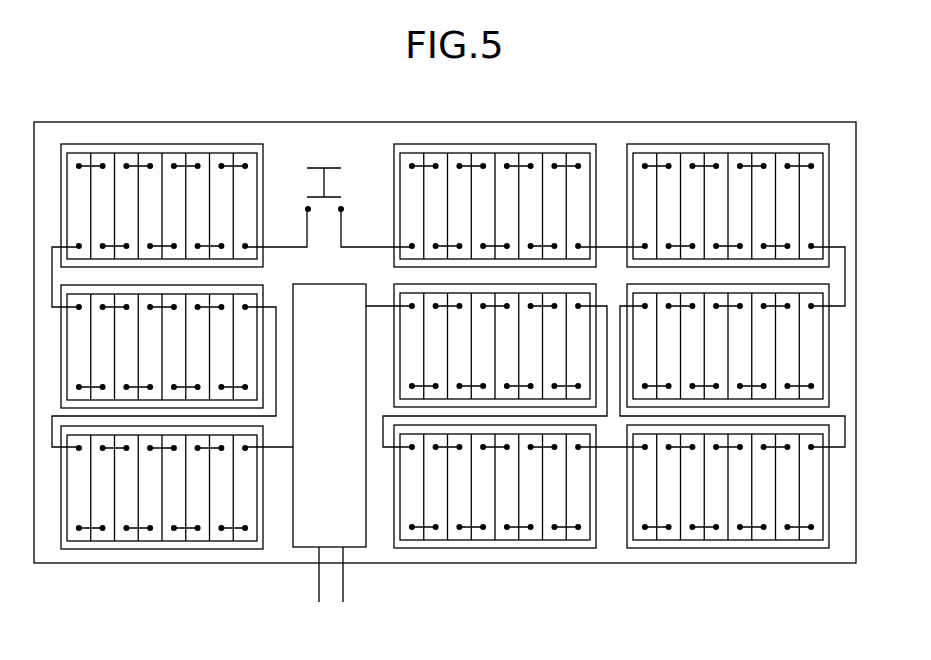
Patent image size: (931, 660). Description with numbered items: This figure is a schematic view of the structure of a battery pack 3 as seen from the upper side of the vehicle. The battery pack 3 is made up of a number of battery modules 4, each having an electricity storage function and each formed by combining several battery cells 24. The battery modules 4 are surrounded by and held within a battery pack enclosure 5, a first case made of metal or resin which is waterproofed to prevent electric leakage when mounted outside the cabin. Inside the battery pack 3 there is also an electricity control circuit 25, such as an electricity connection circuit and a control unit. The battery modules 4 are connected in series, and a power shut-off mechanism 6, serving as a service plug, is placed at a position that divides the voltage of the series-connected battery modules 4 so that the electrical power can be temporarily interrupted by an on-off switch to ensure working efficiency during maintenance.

The battery pack 3 is at (610, 543).
The battery module 4 is at (148, 144).
The battery pack enclosure 5 is at (722, 121).
The power shut-off mechanism 6 is at (324, 166).
The battery cell 24 is at (153, 506).
The electricity control circuit 25 is at (352, 527).